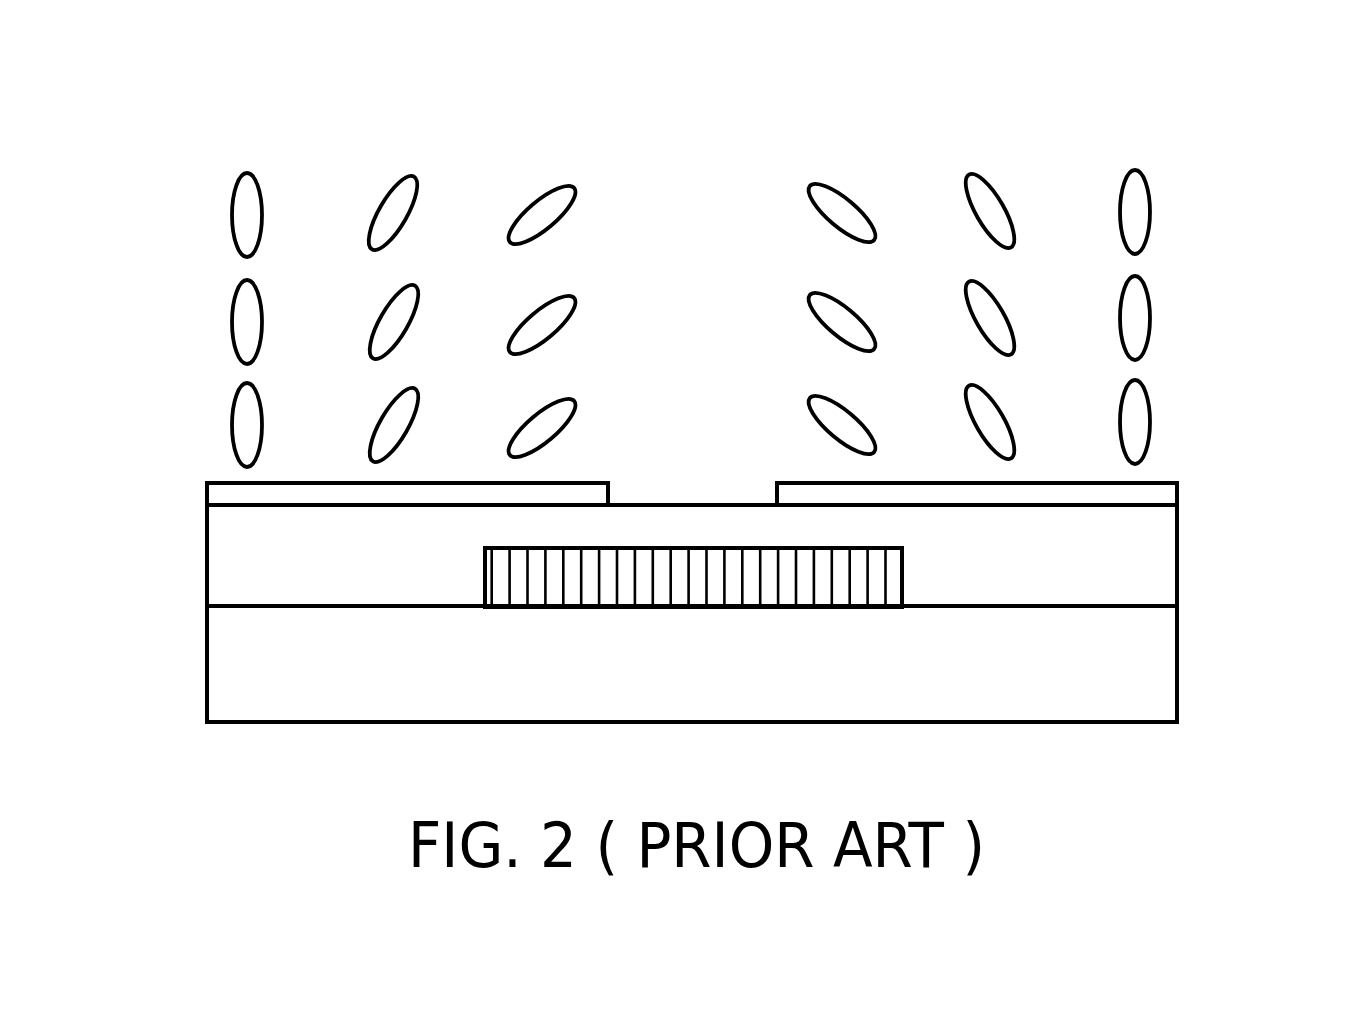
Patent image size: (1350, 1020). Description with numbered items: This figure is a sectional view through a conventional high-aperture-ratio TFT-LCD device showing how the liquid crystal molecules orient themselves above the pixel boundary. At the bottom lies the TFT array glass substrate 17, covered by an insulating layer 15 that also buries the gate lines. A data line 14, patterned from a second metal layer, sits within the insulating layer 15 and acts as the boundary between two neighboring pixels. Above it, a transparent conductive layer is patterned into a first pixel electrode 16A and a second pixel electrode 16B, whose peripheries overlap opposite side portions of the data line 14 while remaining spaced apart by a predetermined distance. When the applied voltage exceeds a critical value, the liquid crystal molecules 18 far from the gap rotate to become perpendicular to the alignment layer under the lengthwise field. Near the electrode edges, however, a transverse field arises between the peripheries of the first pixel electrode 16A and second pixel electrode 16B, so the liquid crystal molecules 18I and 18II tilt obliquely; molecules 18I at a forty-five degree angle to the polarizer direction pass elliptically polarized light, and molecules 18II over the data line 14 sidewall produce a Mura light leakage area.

The data line 14 is at (698, 575).
The insulating layer 15 is at (1150, 566).
The first pixel electrode 16A is at (1148, 493).
The second pixel electrode 16B is at (233, 495).
The glass substrate 17 is at (1148, 668).
The liquid crystal molecules 18 is at (247, 193).
The liquid crystal molecules 18I is at (560, 195).
The liquid crystal molecules 18II is at (400, 192).